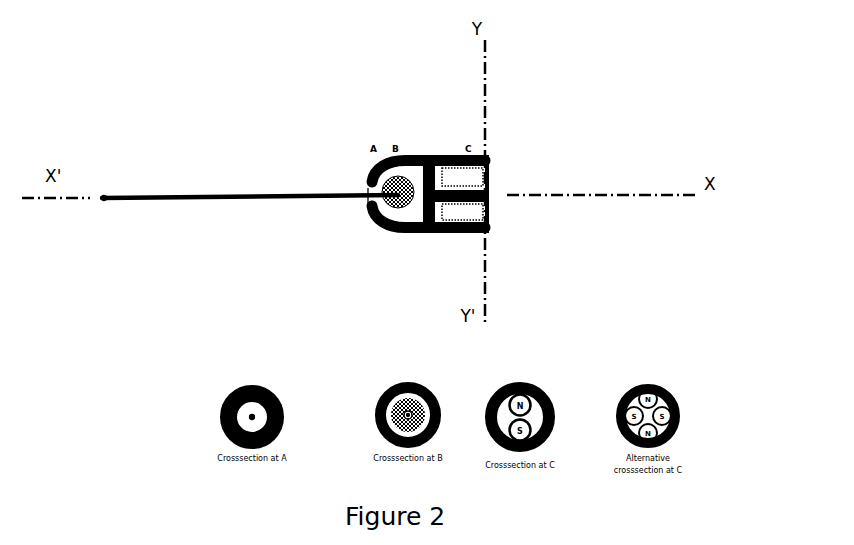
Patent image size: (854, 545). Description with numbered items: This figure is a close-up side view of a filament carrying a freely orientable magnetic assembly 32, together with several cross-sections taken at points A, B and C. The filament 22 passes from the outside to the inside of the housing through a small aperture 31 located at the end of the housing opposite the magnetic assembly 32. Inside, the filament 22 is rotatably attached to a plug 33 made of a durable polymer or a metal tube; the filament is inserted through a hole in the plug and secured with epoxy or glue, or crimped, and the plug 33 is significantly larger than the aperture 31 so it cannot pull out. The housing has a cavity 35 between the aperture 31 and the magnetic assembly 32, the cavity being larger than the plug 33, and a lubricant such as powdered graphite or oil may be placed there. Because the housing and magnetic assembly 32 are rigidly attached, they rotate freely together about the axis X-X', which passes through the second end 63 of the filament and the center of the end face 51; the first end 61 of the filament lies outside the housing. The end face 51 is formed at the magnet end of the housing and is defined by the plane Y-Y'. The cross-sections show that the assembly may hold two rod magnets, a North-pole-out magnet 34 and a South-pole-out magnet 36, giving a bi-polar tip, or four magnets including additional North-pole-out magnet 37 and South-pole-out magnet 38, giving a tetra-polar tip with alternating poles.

The filament 22 is at (258, 196).
The aperture 31 is at (370, 191).
The magnetic assembly 32 is at (364, 172).
The plug 33 is at (348, 388).
The rod magnet with N-pole facing out 34 is at (488, 166).
The cavity 35 is at (428, 226).
The rod magnet with S-pole facing out 36 is at (488, 212).
The rod magnet with N-pole facing out 37 is at (672, 438).
The rod magnet with S-pole facing out 38 is at (678, 410).
The end face 51 is at (487, 157).
The first end of the filament 61 is at (106, 193).
The second end of the filament 63 is at (402, 206).